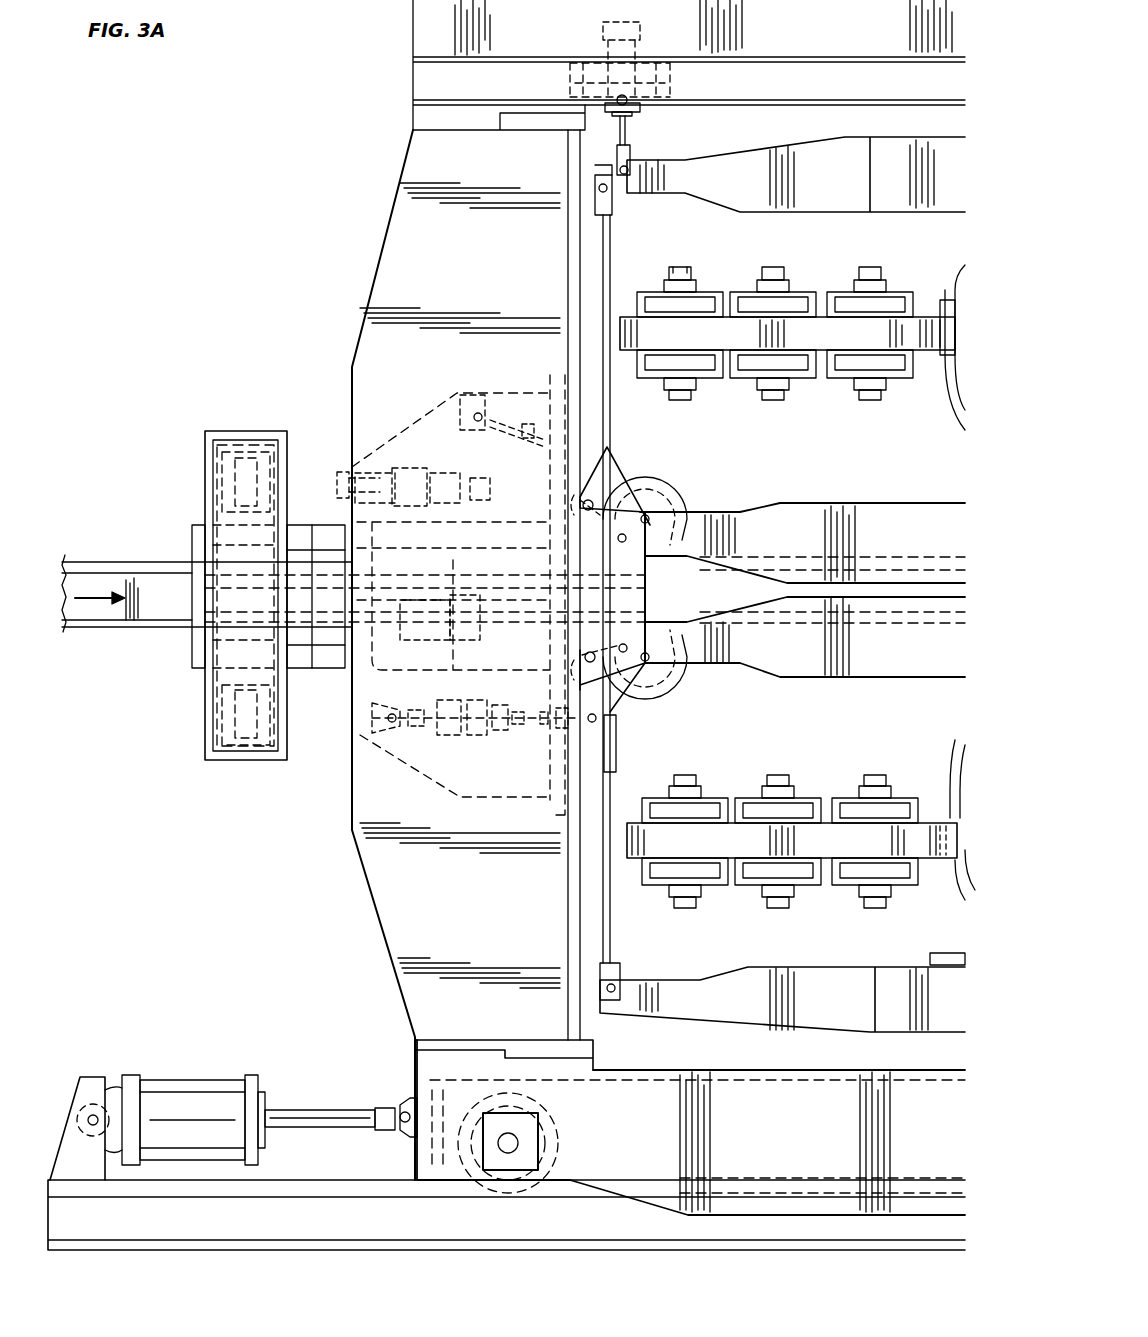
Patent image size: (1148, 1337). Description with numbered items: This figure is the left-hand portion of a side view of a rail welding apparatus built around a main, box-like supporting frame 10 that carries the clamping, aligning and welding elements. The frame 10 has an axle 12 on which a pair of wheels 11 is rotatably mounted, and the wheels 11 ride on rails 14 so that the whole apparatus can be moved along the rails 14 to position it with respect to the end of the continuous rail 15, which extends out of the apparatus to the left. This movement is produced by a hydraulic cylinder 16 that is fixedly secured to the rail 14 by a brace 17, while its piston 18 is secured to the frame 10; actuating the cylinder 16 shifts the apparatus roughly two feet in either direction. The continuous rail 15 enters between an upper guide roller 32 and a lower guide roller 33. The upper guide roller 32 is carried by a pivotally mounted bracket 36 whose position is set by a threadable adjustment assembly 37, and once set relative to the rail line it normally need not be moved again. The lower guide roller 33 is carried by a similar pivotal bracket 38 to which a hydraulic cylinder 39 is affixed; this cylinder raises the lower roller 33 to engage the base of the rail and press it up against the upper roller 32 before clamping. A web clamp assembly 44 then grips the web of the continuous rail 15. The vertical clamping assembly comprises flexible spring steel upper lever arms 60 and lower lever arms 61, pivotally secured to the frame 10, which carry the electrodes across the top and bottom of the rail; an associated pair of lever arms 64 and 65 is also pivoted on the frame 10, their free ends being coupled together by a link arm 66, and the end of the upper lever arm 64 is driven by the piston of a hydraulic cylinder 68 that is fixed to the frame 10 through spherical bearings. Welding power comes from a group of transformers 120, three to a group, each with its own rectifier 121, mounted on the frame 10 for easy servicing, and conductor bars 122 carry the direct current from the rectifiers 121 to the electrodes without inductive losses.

The frame 10 is at (362, 878).
The wheels 11 is at (500, 1183).
The axle 12 is at (515, 1143).
The rails 14 is at (360, 1228).
The continuous rail 15 is at (137, 560).
The hydraulic cylinder 16 is at (196, 1080).
The brace 17 is at (92, 1075).
The piston 18 is at (325, 1110).
The upper guide roller 32 is at (678, 485).
The lower guide roller 33 is at (668, 680).
The pivotally mounted bracket 36 is at (620, 452).
The threadable adjustment assembly 37 is at (518, 368).
The pivotal bracket 38 is at (625, 710).
The hydraulic cylinder 39 is at (470, 735).
The web clamp assembly 44 is at (338, 468).
The upper lever arm 60 is at (828, 500).
The lower lever arm 61 is at (808, 665).
The lever arm 64 is at (770, 148).
The lever arm 65 is at (757, 1015).
The link arm 66 is at (612, 255).
The hydraulic cylinder 68 is at (640, 52).
The transformers 120 is at (817, 278).
The rectifier 121 is at (750, 365).
The conductor bars 122 is at (955, 290).